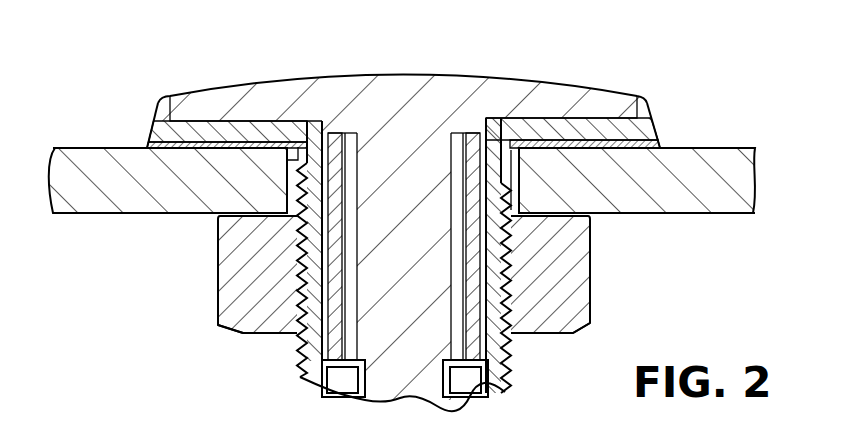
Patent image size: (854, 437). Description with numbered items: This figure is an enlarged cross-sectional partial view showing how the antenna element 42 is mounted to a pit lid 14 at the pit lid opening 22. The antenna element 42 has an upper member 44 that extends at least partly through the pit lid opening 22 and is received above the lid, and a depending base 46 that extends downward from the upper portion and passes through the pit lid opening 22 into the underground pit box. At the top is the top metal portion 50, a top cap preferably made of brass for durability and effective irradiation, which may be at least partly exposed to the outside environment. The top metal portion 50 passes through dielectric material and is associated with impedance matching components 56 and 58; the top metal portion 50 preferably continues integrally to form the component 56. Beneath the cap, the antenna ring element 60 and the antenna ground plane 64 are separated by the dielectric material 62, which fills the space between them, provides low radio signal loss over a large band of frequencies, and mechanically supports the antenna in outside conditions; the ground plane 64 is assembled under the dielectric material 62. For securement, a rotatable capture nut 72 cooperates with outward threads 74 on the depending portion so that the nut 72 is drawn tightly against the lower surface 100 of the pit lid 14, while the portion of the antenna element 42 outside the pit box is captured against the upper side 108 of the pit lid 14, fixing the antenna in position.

The pit lid 14 is at (742, 204).
The pit lid opening 22 is at (514, 181).
The antenna element 42 is at (695, 98).
The upper member 44 is at (120, 118).
The depending base 46 is at (264, 354).
The top metal portion 50 is at (503, 76).
The impedance matching component 56 is at (422, 189).
The impedance matching component 58 is at (422, 363).
The antenna ring element 60 is at (561, 118).
The dielectric material 62 is at (656, 98).
The antenna ground plane 64 is at (660, 139).
The capture nut 72 is at (592, 262).
The outward threads 74 is at (512, 352).
The lower surface 100 is at (662, 207).
The upper side 108 is at (735, 148).